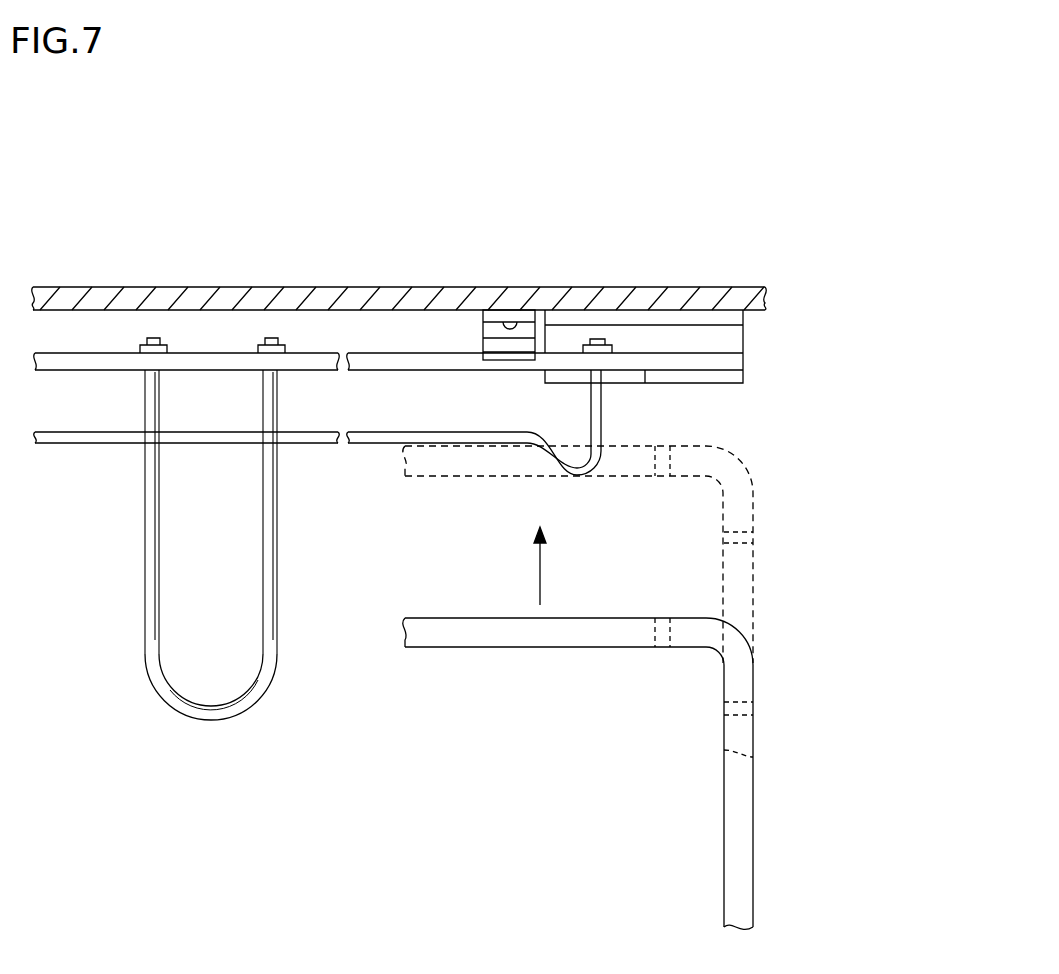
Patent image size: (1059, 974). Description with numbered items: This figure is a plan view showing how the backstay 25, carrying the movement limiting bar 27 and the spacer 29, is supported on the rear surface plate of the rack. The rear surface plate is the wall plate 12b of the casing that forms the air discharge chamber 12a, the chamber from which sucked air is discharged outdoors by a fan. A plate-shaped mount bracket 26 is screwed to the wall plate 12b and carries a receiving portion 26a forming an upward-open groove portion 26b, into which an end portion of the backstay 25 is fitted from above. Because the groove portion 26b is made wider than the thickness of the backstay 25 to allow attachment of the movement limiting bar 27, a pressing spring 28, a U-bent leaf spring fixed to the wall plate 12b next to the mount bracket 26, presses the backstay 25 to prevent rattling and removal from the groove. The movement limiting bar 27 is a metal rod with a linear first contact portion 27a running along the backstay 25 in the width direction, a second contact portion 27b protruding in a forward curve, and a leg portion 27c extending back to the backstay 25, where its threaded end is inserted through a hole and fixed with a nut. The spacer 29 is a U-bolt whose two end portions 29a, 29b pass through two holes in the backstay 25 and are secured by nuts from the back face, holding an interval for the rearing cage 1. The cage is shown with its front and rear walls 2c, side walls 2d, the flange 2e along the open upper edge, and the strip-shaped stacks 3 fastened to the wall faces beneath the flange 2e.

The rearing cage 1 is at (578, 687).
The front and rear walls 2c is at (578, 575).
The side walls 2d is at (723, 832).
The flange 2e is at (441, 618).
The stack 3 is at (659, 618).
The air discharge chamber 12a is at (445, 203).
The wall plate 12b is at (272, 300).
The backstay 25 is at (106, 352).
The mount bracket 26 is at (672, 379).
The receiving portion 26a is at (665, 377).
The groove portion 26b is at (713, 345).
The movement limiting bar 27 is at (325, 460).
The first contact portion 27a is at (318, 447).
The second contact portion 27b is at (577, 477).
The leg portion 27c is at (591, 412).
The pressing spring 28 is at (480, 343).
The spacer 29 is at (210, 589).
The end portion of spacer 29a is at (270, 399).
The end portion of spacer 29b is at (152, 407).